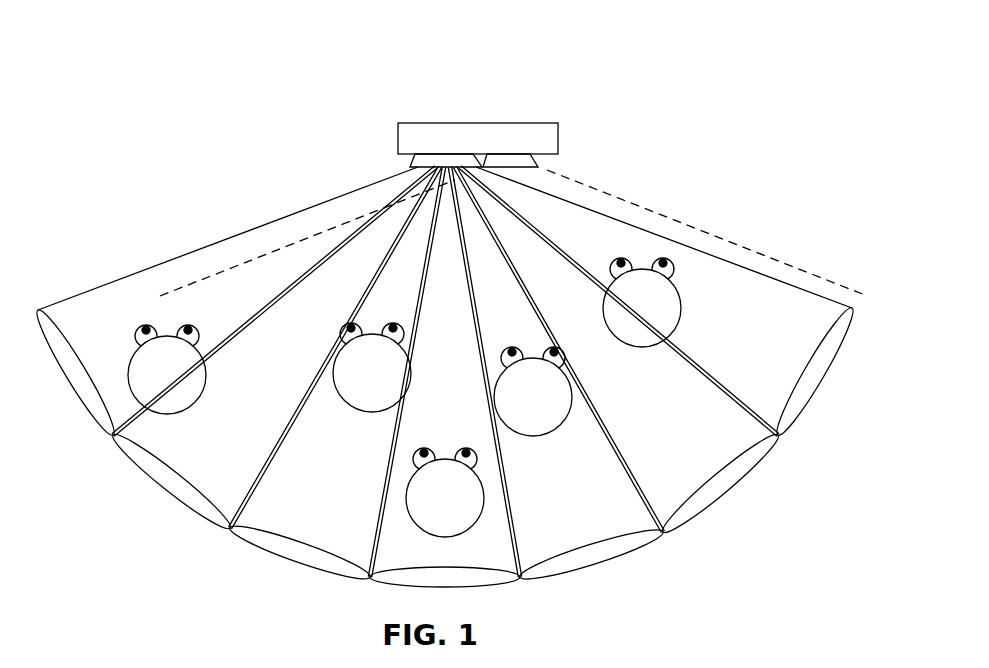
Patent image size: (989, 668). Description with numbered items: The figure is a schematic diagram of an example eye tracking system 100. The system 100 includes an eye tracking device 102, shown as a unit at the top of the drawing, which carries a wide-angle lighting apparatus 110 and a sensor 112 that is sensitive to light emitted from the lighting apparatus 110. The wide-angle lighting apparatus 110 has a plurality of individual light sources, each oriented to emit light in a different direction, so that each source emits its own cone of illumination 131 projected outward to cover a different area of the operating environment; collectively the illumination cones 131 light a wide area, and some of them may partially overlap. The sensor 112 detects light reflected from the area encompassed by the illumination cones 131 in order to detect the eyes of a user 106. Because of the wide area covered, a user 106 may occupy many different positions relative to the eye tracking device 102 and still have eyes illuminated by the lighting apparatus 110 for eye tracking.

The system 100 is at (51, 48).
The eye tracking device 102 is at (517, 123).
The wide-angle lighting apparatus 110 is at (410, 164).
The sensor 112 is at (545, 164).
The user 106 is at (486, 488).
The cone of illumination 131 is at (617, 553).